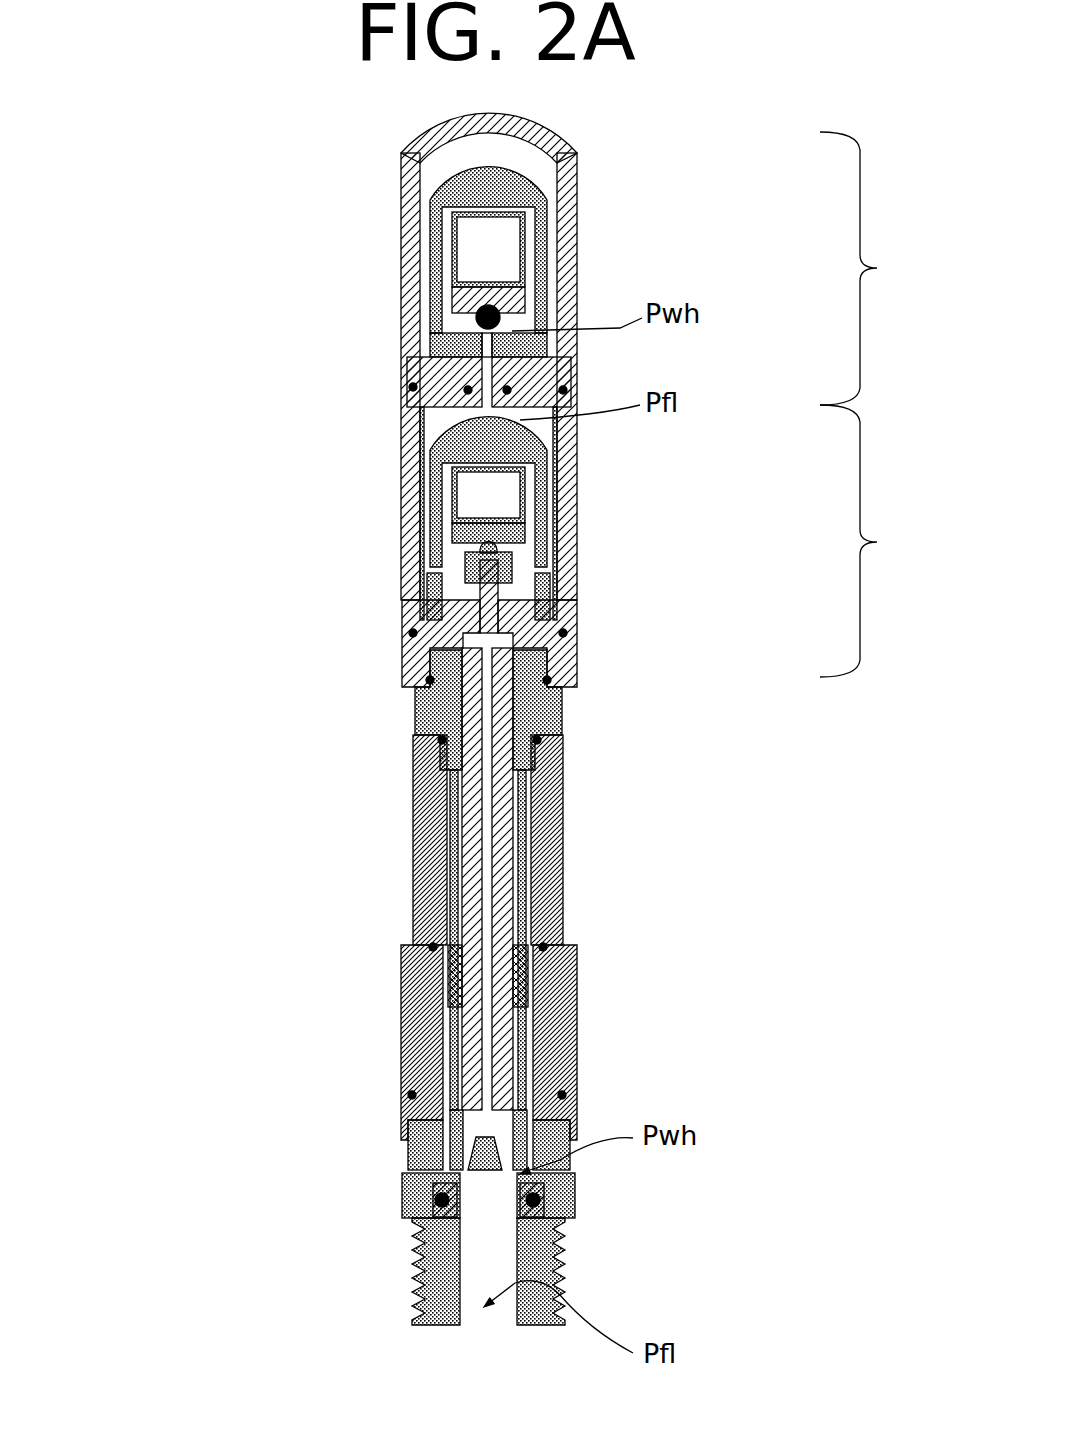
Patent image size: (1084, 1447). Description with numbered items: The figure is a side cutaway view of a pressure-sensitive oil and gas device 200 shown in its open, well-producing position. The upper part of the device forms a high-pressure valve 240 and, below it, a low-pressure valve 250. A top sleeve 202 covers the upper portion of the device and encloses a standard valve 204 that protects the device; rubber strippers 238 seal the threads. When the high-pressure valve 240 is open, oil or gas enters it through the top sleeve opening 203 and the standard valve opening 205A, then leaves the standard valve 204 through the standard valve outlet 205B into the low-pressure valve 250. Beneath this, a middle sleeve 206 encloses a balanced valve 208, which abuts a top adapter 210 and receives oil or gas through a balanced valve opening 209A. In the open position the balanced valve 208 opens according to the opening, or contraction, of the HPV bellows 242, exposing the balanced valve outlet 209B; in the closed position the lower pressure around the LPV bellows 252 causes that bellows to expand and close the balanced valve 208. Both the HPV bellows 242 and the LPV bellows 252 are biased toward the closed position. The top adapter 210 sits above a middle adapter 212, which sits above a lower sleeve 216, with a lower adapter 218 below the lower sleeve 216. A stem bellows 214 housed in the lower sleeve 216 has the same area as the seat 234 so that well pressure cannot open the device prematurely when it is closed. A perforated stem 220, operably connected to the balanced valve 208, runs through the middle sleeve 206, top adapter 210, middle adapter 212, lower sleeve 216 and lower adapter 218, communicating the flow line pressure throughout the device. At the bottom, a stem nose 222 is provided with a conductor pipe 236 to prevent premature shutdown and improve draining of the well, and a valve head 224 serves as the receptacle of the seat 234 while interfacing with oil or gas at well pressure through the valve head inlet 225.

The pressure-sensitive oil and gas device 200 is at (137, 100).
The top sleeve 202 is at (402, 222).
The top sleeve opening 203 is at (440, 327).
The standard valve 204 is at (430, 268).
The standard valve opening 205A is at (435, 333).
The standard valve outlet 205B is at (490, 366).
The middle sleeve 206 is at (410, 432).
The balanced valve 208 is at (432, 452).
The balanced valve opening 209A is at (433, 567).
The balanced valve outlet 209B is at (503, 590).
The top adapter 210 is at (410, 658).
The middle adapter 212 is at (417, 708).
The stem bellows 214 is at (417, 788).
The lower sleeve 216 is at (417, 872).
The lower adapter 218 is at (413, 1020).
The perforated stem 220 is at (480, 593).
The stem nose 222 is at (460, 1125).
The valve head 224 is at (417, 1263).
The valve head inlet 225 is at (445, 1168).
The seat 234 is at (545, 1190).
The conductor pipe 236 is at (437, 1190).
The rubber strippers 238 is at (413, 387).
The high-pressure valve 240 is at (884, 268).
The HPV bellows 242 is at (495, 247).
The low-pressure valve 250 is at (882, 541).
The LPV bellows 252 is at (497, 505).